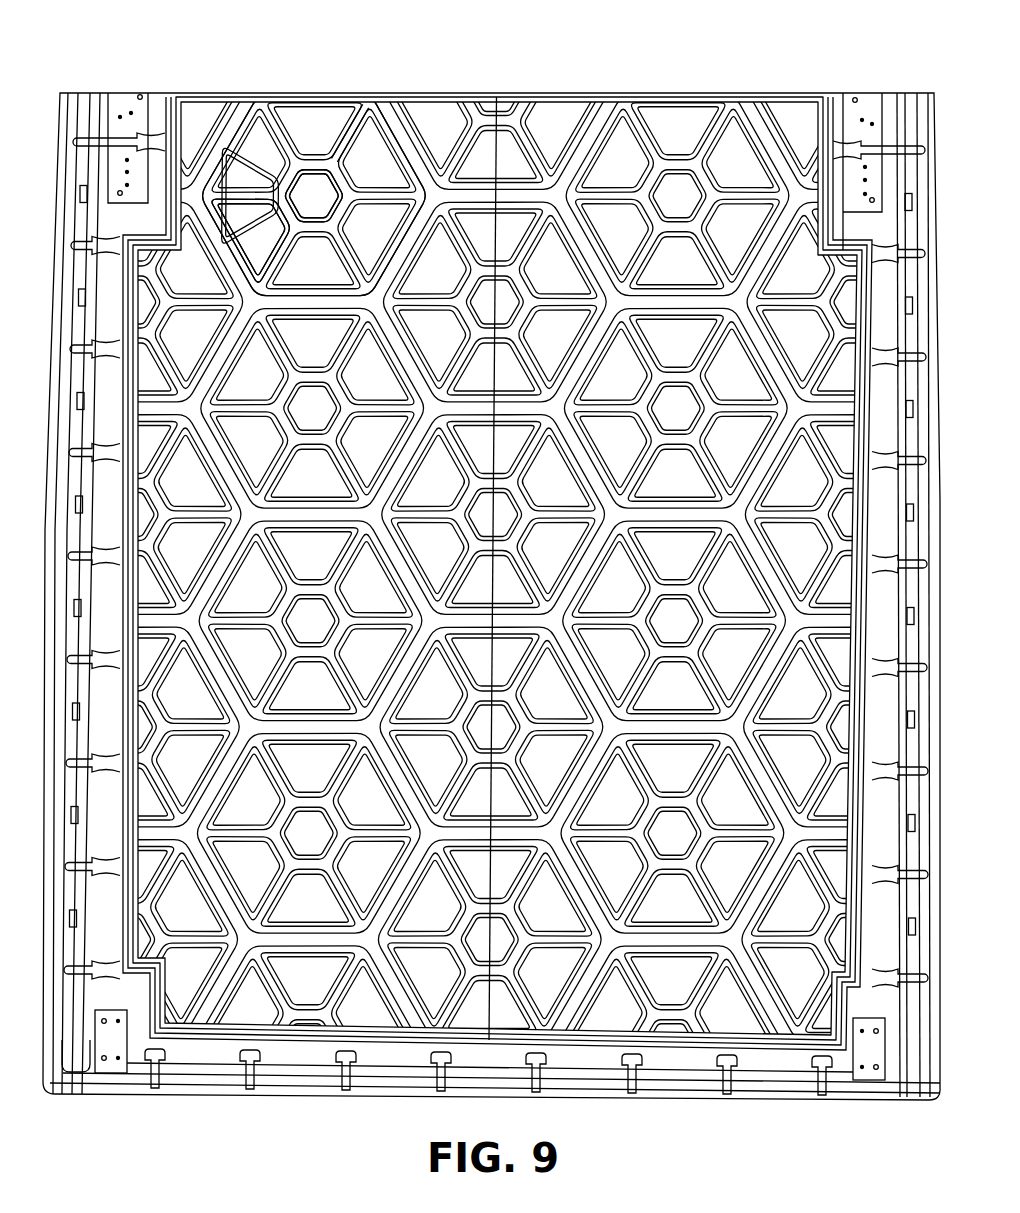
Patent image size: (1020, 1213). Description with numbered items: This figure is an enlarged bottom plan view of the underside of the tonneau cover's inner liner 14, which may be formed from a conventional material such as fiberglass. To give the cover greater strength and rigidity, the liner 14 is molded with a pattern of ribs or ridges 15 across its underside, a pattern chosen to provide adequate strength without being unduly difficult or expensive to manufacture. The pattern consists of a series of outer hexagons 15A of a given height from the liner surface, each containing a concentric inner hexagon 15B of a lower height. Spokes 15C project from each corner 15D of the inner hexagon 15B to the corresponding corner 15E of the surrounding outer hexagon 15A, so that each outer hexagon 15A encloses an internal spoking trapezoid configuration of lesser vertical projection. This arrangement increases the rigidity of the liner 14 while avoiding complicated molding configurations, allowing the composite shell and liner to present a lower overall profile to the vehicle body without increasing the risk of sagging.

The inner liner 14 is at (534, 97).
The ribs or ridges 15 is at (428, 108).
The outer hexagon 15A is at (238, 106).
The inner hexagon 15B is at (318, 158).
The spoke 15C is at (233, 175).
The corner of inner hexagon 15D is at (281, 188).
The corner of outer hexagon 15E is at (218, 210).